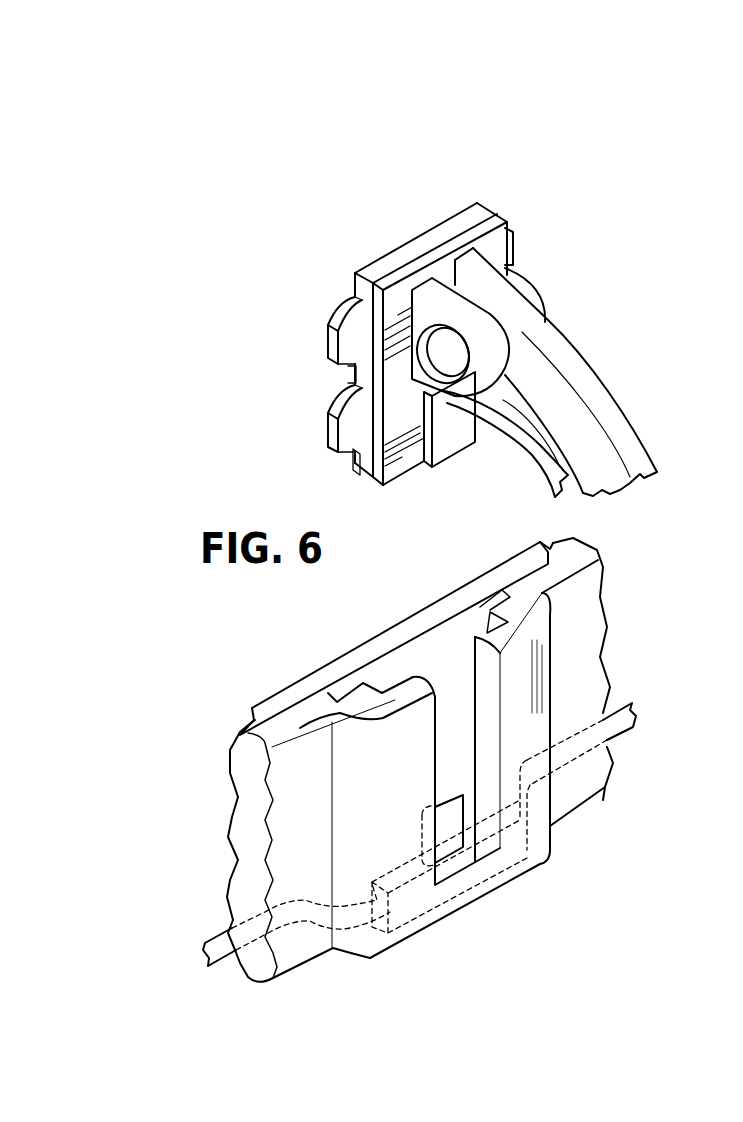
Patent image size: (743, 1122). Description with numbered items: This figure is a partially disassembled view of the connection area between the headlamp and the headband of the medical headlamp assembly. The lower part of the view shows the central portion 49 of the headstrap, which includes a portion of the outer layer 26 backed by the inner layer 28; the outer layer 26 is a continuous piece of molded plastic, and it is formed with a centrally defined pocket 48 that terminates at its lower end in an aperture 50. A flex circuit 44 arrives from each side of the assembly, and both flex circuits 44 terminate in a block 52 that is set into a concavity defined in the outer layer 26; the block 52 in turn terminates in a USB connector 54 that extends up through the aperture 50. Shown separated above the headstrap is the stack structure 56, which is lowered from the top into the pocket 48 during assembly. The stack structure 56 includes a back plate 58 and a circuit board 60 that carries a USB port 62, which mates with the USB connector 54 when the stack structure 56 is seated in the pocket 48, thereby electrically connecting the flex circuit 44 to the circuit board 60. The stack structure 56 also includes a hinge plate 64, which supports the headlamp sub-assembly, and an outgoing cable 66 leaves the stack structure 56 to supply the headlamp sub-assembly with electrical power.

The outer layer 26 is at (597, 602).
The inner layer 28 is at (497, 564).
The flex circuit 44 is at (208, 940).
The pocket 48 is at (388, 672).
The central portion 49 is at (398, 605).
The aperture 50 is at (470, 812).
The block 52 is at (453, 904).
The USB connector 54 is at (432, 802).
The stack structure 56 is at (407, 233).
The back plate 58 is at (328, 344).
The circuit board 60 is at (353, 378).
The USB port 62 is at (455, 455).
The hinge plate 64 is at (505, 250).
The outgoing cable 66 is at (517, 452).